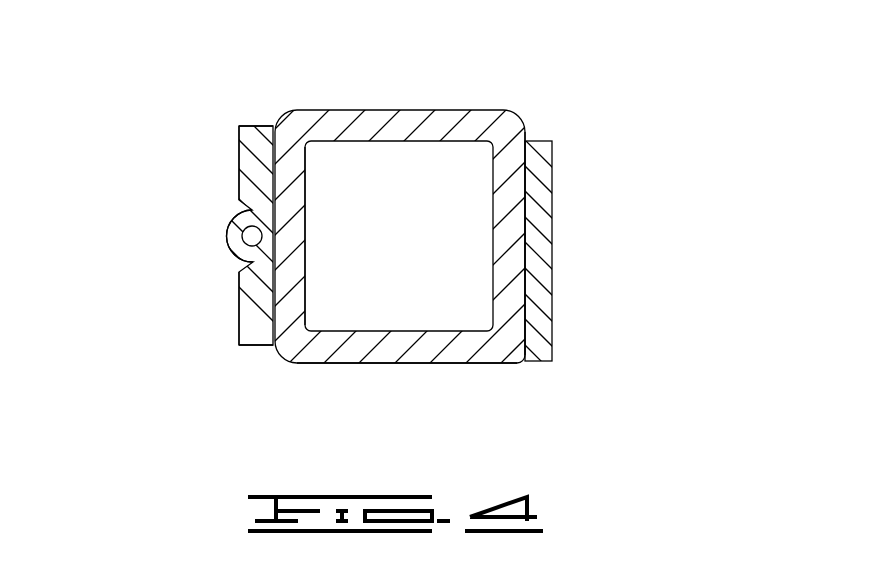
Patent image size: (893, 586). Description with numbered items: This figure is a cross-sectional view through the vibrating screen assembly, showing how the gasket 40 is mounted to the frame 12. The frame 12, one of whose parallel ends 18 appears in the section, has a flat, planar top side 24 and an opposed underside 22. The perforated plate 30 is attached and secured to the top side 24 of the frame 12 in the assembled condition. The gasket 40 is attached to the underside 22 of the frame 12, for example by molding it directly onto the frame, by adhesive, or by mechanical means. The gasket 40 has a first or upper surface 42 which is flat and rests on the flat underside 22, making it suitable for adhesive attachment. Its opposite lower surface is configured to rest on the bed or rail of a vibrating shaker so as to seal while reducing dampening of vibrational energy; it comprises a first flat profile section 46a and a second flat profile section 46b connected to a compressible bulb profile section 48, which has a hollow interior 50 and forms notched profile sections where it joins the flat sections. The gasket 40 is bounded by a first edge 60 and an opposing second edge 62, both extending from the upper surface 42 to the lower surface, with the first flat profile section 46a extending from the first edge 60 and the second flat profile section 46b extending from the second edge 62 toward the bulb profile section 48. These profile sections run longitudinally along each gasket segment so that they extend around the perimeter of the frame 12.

The frame 12 is at (480, 362).
The end 18 is at (408, 110).
The underside 22 is at (280, 190).
The top side 24 is at (513, 193).
The perforated plate 30 is at (553, 260).
The gasket 40 is at (355, 291).
The upper surface 42 is at (292, 304).
The first flat profile section 46a is at (239, 305).
The second flat profile section 46b is at (239, 180).
The bulb profile section 48 is at (232, 221).
The hollow interior 50 is at (244, 241).
The first edge 60 is at (253, 350).
The second edge 62 is at (248, 125).